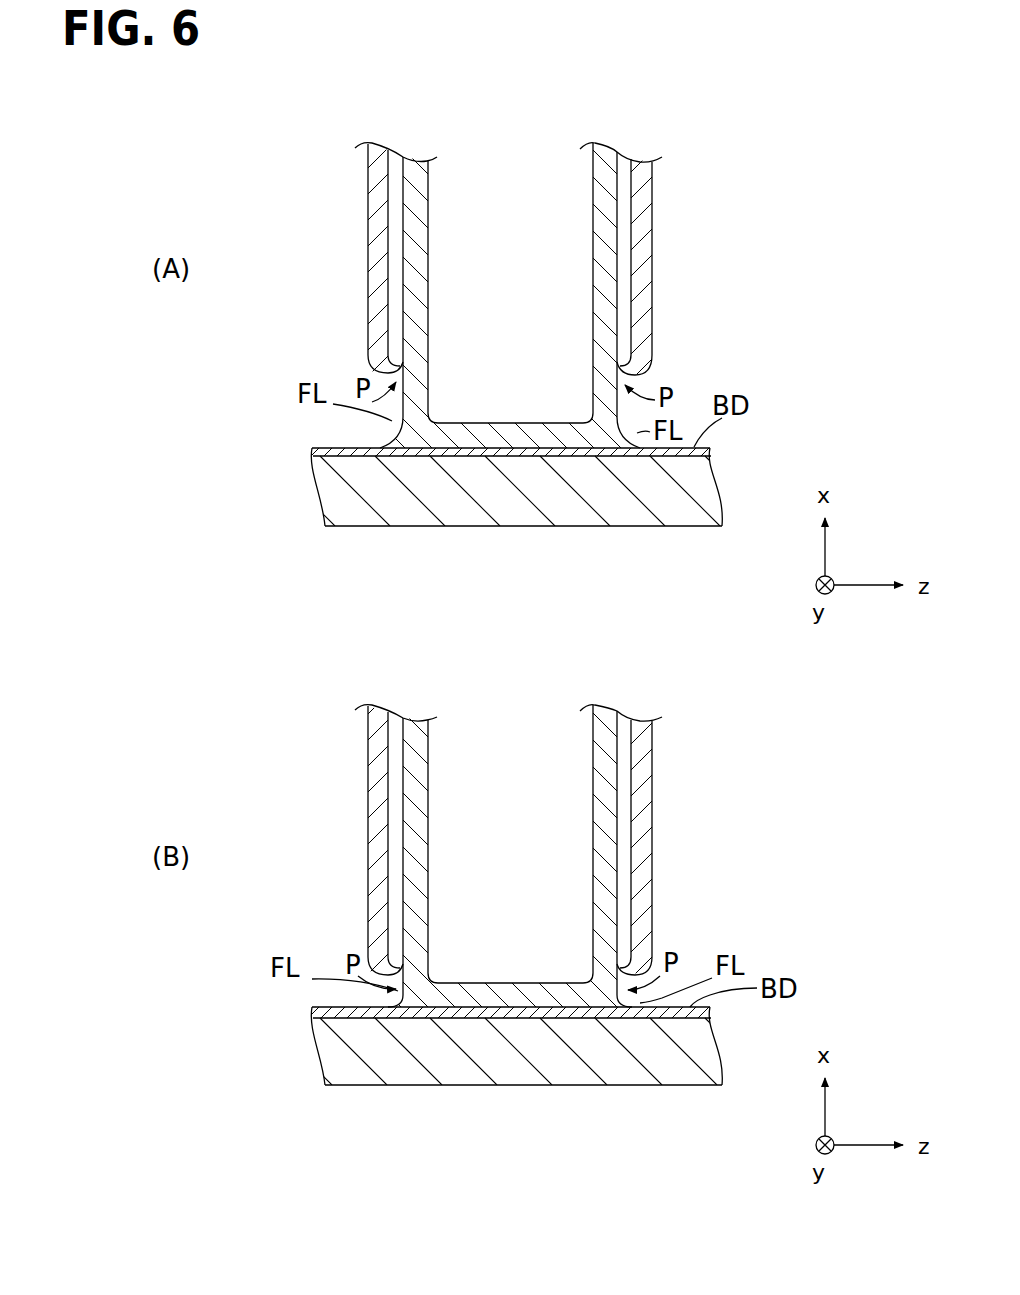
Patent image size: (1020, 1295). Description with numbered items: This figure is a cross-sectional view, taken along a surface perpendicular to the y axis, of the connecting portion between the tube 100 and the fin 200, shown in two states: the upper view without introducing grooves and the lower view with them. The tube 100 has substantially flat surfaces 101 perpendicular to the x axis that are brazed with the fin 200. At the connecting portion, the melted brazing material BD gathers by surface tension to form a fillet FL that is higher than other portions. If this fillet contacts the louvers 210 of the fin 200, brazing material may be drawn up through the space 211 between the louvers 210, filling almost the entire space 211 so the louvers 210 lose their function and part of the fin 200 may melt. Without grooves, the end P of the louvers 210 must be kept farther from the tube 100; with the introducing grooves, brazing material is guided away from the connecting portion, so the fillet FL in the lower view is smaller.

The tube 100 is at (579, 508).
The flat surfaces 101 is at (392, 442).
The fin 200 is at (404, 188).
The louvers 210 is at (375, 248).
The space 211 is at (390, 306).